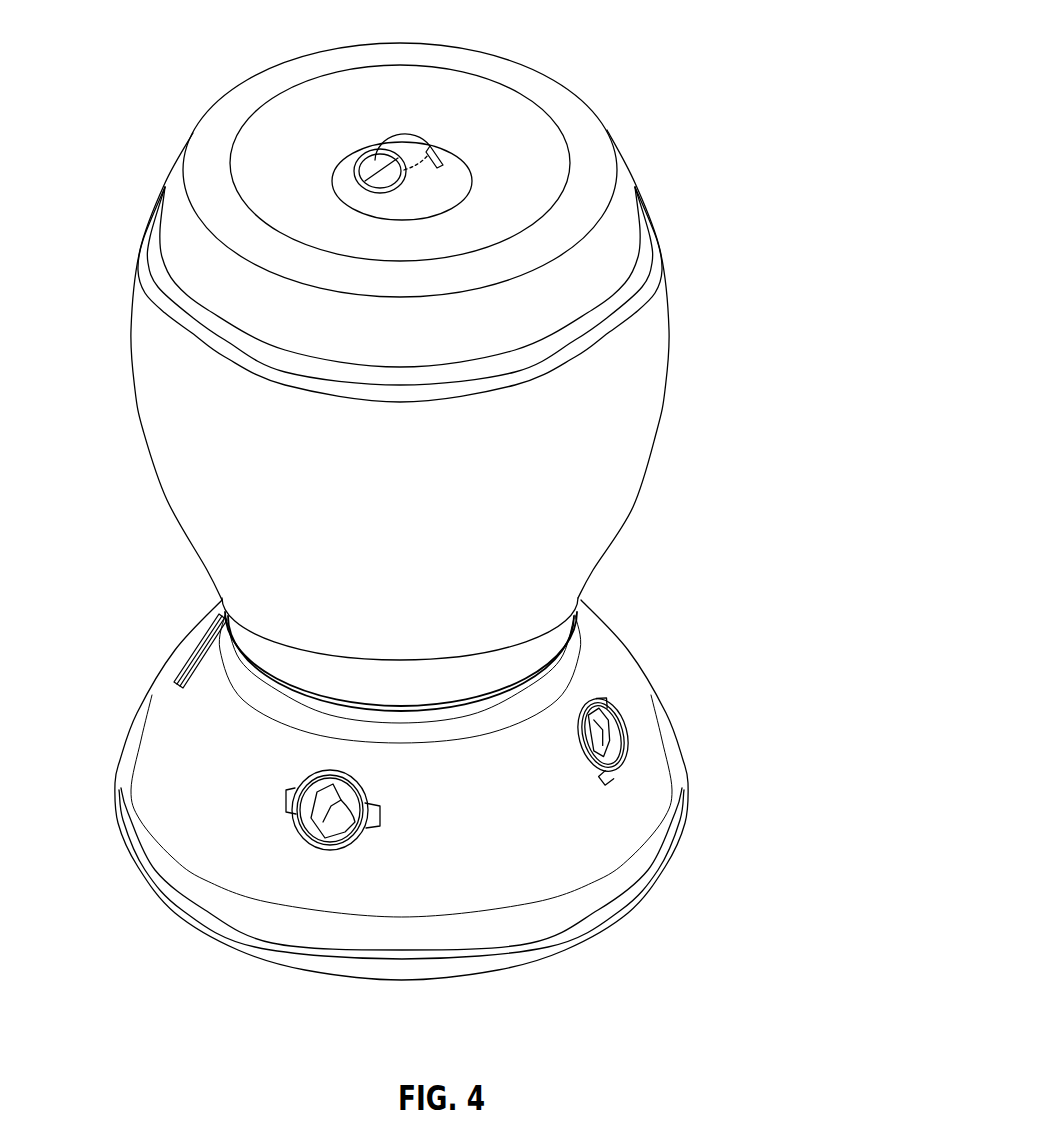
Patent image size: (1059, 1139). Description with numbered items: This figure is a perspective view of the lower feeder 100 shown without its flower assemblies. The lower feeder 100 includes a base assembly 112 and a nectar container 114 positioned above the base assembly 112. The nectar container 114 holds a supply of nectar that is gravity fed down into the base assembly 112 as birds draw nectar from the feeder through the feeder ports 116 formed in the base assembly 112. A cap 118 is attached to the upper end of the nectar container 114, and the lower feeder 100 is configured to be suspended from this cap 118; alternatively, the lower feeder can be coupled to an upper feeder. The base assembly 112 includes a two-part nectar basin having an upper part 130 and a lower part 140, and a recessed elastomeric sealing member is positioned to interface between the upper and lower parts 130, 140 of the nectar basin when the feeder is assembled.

The lower feeder 100 is at (770, 30).
The base assembly 112 is at (714, 743).
The nectar container 114 is at (670, 352).
The feeder ports 116 is at (607, 723).
The cap 118 is at (580, 118).
The upper part 130 is at (160, 738).
The lower part 140 is at (175, 921).